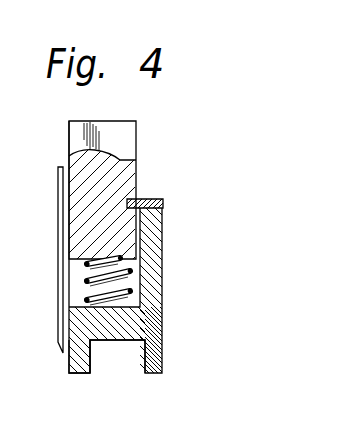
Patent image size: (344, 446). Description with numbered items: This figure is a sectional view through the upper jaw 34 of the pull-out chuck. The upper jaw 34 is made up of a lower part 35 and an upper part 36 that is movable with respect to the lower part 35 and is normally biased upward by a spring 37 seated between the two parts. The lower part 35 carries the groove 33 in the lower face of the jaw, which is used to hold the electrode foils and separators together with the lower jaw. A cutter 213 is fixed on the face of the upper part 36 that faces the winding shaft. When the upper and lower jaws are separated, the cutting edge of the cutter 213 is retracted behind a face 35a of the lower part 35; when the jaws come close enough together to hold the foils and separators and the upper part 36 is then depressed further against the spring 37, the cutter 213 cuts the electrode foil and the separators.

The upper part 36 is at (133, 148).
The upper jaw 34 is at (176, 208).
The lower part 35 is at (151, 329).
The face 35a is at (83, 374).
The groove 33 is at (116, 345).
The spring 37 is at (132, 271).
The cutter 213 is at (62, 303).